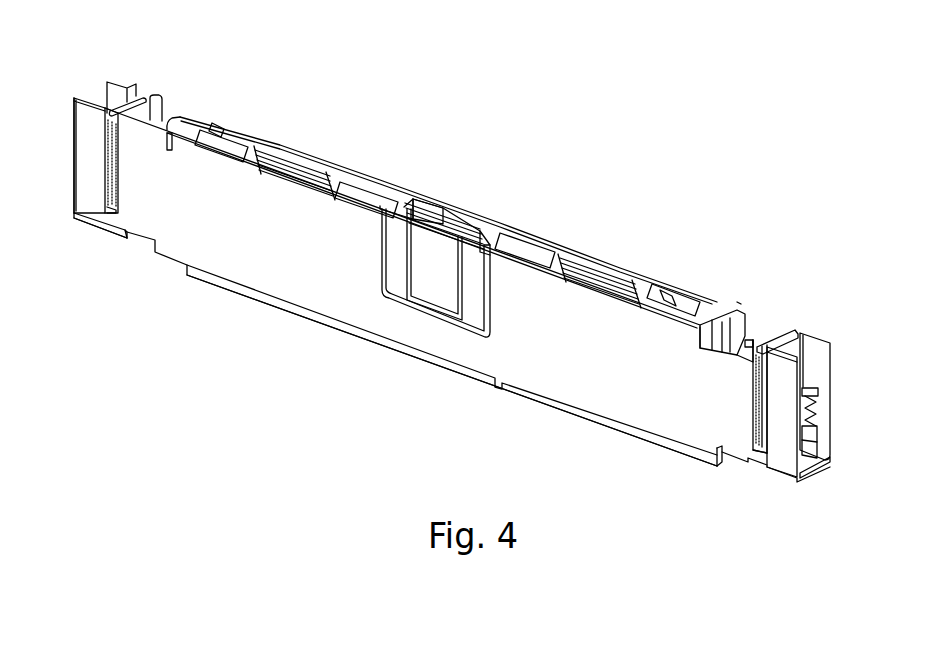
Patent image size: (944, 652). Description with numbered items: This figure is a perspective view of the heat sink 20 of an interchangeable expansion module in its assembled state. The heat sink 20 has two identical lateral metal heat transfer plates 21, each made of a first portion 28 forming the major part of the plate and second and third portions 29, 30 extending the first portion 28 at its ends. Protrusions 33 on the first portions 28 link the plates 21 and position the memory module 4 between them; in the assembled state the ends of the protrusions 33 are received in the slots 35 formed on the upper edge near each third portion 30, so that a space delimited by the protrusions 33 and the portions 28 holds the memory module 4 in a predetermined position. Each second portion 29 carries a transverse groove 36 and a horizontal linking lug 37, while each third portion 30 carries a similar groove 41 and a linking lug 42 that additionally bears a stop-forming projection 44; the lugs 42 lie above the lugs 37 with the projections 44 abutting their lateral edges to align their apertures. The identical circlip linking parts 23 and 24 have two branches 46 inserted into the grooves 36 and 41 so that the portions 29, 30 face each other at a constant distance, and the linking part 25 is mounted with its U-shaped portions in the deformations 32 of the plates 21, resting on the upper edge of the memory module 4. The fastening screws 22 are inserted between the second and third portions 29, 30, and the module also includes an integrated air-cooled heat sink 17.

The heat sink 20 is at (78, 64).
The heat transfer plate 21 is at (288, 270).
The fastening means 22 is at (810, 386).
The linking part 23 is at (123, 100).
The linking part 24 is at (778, 336).
The linking part 25 is at (425, 202).
The first portion 28 is at (252, 225).
The second portion 29 is at (124, 96).
The third portion 30 is at (84, 160).
The deformation 32 is at (386, 267).
The protrusion 33 is at (182, 122).
The slot 35 is at (170, 150).
The groove 36 is at (760, 435).
The linking lug 37 is at (106, 234).
The groove 41 is at (107, 127).
The linking lug 42 is at (74, 220).
The stop-forming projection 44 is at (752, 388).
The branch 46 is at (113, 213).
The memory module 4 is at (289, 152).
The integrated air-cooled heat sink 17 is at (360, 184).